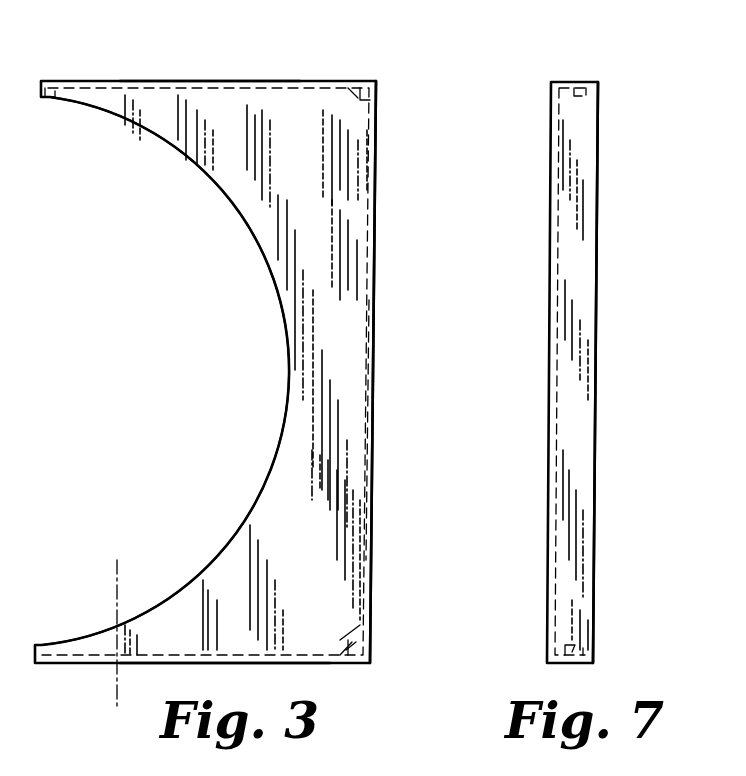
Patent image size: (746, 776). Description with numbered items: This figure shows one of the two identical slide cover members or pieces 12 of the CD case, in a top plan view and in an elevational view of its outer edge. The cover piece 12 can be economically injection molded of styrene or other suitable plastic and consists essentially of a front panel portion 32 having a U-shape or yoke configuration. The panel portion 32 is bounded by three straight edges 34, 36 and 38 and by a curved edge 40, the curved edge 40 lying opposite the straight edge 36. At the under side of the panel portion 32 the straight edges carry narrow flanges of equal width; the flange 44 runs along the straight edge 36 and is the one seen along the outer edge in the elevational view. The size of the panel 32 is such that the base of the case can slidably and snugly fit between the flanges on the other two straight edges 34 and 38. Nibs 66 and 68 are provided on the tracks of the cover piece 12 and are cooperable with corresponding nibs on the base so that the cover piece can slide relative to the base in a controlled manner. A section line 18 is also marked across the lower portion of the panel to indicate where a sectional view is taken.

In FIG. 3, the cover member or piece 12 is at (329, 64).
In FIG. 7, the cover member or piece 12 is at (619, 85).
In FIG. 3, the section line 18 is at (115, 607).
In FIG. 3, the front panel portion 32 is at (353, 323).
In FIG. 7, the front panel portion 32 is at (547, 418).
In FIG. 3, the straight edge 34 is at (251, 79).
In FIG. 3, the straight edge 36 is at (377, 250).
In FIG. 3, the straight edge 38 is at (328, 665).
In FIG. 3, the curved edge 40 is at (268, 262).
In FIG. 3, the flange 44 is at (373, 441).
In FIG. 7, the flange 44 is at (584, 378).
In FIG. 3, the nib 66 is at (51, 92).
In FIG. 3, the nib 68 is at (358, 96).
In FIG. 7, the nib 68 is at (578, 86).